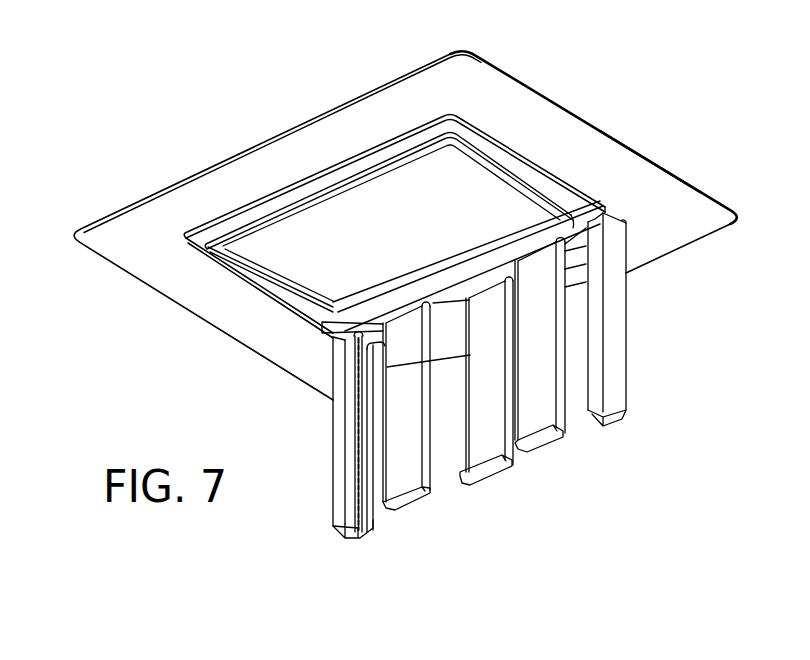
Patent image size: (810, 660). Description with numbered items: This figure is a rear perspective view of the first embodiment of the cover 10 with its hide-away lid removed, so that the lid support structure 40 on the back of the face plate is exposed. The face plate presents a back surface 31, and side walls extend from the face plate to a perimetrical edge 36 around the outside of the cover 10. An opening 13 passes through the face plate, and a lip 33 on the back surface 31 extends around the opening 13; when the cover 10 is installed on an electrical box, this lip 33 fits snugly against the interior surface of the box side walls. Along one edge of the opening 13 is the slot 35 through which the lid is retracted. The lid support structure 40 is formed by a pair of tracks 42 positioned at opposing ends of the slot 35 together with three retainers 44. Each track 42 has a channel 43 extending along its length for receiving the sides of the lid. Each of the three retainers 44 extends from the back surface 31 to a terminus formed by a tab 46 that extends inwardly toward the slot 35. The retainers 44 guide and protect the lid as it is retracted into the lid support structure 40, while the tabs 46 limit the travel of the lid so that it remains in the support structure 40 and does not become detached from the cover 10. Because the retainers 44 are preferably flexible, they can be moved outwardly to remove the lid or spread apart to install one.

The cover 10 is at (266, 110).
The opening 13 is at (422, 224).
The back surface 31 is at (135, 248).
The lip 33 is at (271, 217).
The slot 35 is at (353, 338).
The perimetrical edge 36 is at (660, 162).
The lid support structure 40 is at (647, 448).
The track 42 is at (333, 530).
The channel 43 is at (357, 540).
The retainer 44 is at (403, 411).
The tab 46 is at (427, 492).